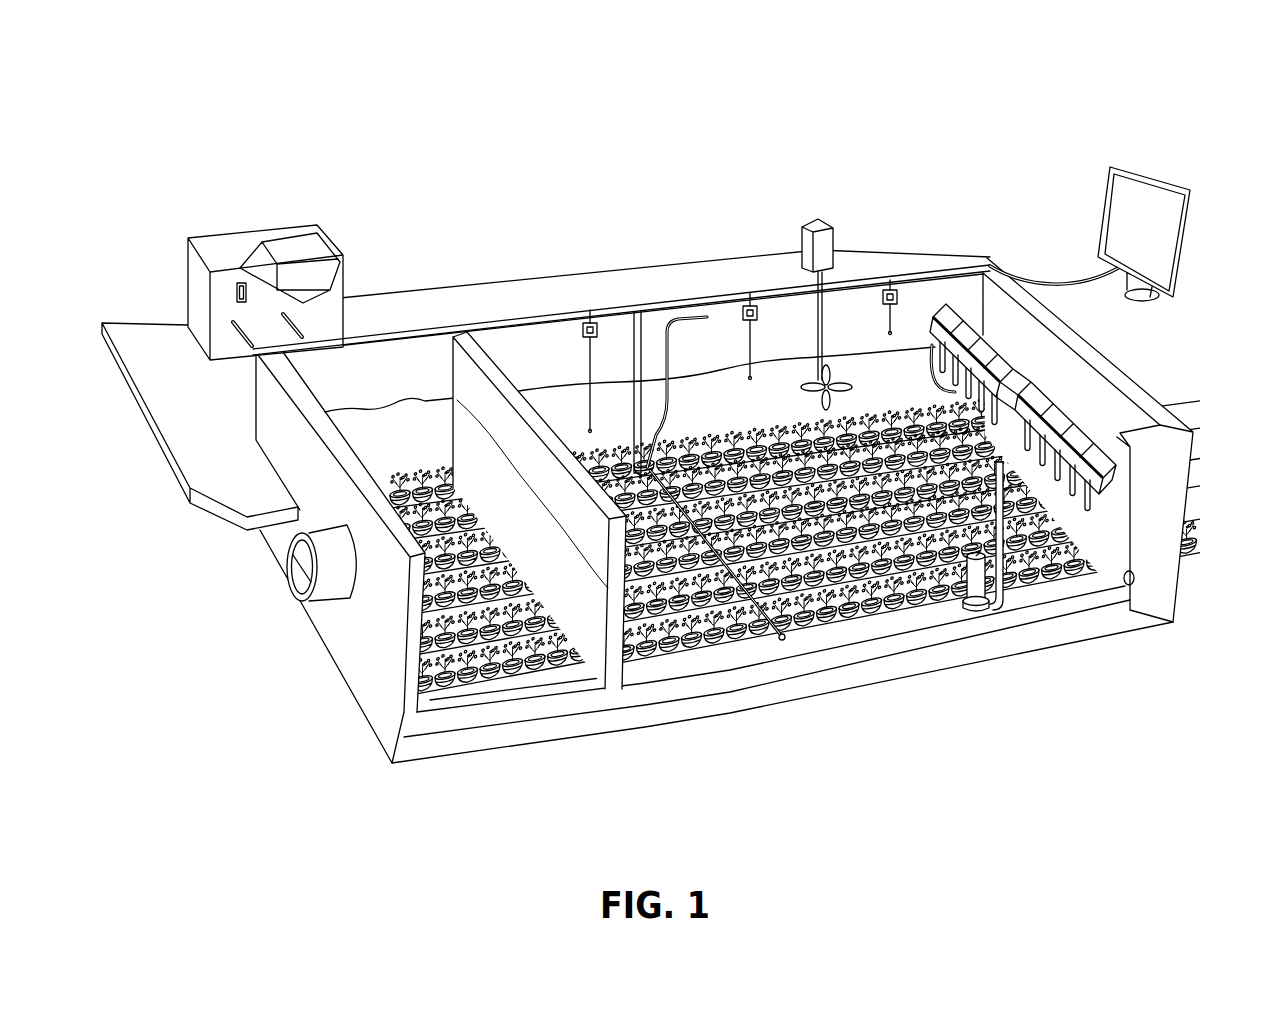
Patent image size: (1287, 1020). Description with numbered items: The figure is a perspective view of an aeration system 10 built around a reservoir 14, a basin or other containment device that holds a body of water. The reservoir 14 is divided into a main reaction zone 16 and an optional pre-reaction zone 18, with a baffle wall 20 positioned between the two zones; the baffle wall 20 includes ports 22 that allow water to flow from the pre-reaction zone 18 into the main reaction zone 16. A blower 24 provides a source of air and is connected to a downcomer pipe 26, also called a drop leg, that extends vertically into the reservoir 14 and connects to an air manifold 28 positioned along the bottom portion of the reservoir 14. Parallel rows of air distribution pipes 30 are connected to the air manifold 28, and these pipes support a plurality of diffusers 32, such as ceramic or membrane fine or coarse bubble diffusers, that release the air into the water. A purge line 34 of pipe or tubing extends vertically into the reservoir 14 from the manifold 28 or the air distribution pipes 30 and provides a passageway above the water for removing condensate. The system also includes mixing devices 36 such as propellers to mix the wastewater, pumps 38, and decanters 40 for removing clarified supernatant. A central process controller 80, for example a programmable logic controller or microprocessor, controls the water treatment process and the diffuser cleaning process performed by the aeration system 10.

The aeration system 10 is at (481, 145).
The reservoir 14 is at (352, 662).
The main reaction zone 16 is at (741, 407).
The pre-reaction zone 18 is at (409, 447).
The baffle wall 20 is at (483, 357).
The ports 22 is at (590, 670).
The blower 24 is at (213, 245).
The downcomer pipe 26 is at (642, 323).
The air manifold 28 is at (775, 645).
The air distribution pipes 30 is at (897, 622).
The diffusers 32 is at (698, 648).
The purge line 34 is at (690, 320).
The mixing devices 36 is at (823, 378).
The pumps 38 is at (978, 584).
The decanters 40 is at (1073, 440).
The central process controller 80 is at (1102, 198).